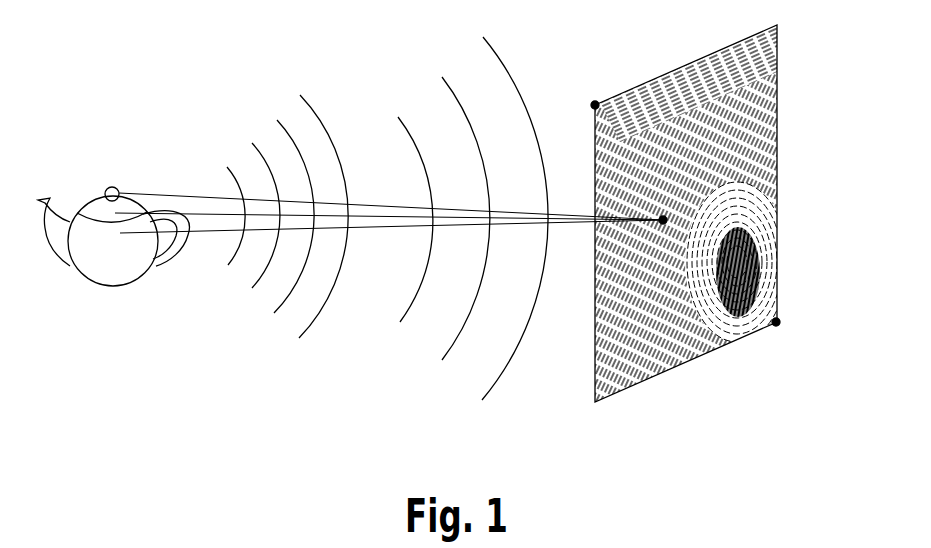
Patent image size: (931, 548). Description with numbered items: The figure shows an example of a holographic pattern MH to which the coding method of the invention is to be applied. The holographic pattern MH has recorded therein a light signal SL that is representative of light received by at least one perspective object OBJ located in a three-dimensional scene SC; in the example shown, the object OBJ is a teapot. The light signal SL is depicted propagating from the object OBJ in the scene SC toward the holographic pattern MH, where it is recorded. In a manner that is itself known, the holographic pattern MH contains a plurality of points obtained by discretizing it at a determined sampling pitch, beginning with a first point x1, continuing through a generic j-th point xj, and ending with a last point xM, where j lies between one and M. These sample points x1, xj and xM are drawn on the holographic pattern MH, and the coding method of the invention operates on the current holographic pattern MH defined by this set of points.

The perspective object OBJ is at (125, 305).
The three-dimensional scene SC is at (119, 130).
The light signal SL is at (563, 180).
The holographic pattern MH is at (822, 122).
The point of the holographic pattern x1 is at (595, 105).
The point of the holographic pattern xj is at (663, 222).
The point of the holographic pattern xM is at (777, 322).